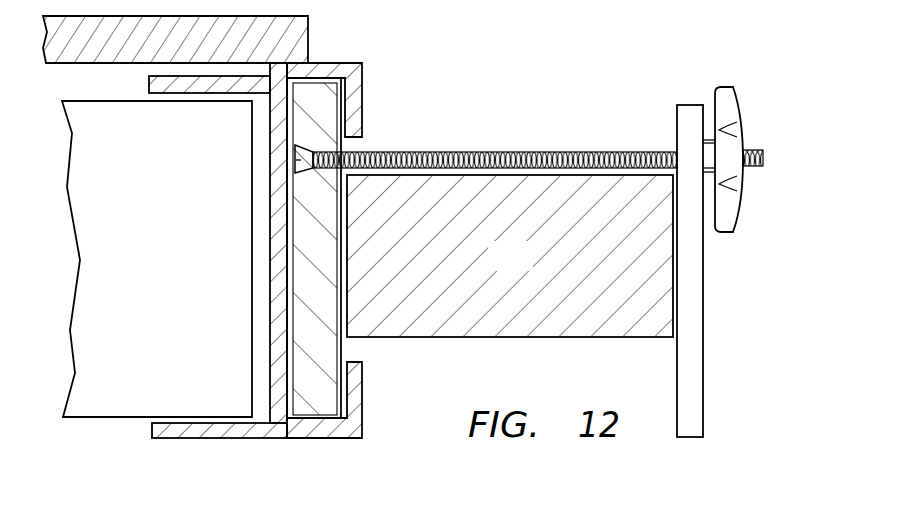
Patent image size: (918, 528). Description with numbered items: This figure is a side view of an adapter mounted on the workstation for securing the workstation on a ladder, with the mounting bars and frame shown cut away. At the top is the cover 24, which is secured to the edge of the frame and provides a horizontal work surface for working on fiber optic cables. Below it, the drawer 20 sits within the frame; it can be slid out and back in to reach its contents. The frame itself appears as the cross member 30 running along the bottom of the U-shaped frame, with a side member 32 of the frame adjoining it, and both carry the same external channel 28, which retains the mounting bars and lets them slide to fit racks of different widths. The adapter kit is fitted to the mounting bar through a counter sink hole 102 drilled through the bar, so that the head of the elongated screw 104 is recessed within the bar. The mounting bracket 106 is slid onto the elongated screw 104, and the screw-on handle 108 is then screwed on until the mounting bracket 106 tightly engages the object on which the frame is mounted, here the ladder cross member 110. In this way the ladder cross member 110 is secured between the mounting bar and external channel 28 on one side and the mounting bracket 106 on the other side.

The drawer 20 is at (173, 268).
The cover 24 is at (308, 33).
The external channel 28 is at (362, 93).
The cross member 30 is at (270, 308).
The side member 32 is at (262, 418).
The counter sink hole 102 is at (294, 157).
The elongated screw 104 is at (503, 152).
The mounting bracket 106 is at (703, 336).
The screw-on handle 108 is at (740, 104).
The ladder cross member 110 is at (528, 267).